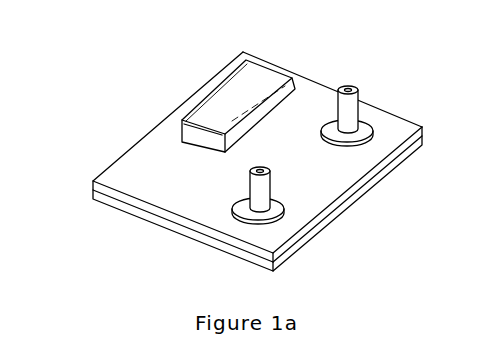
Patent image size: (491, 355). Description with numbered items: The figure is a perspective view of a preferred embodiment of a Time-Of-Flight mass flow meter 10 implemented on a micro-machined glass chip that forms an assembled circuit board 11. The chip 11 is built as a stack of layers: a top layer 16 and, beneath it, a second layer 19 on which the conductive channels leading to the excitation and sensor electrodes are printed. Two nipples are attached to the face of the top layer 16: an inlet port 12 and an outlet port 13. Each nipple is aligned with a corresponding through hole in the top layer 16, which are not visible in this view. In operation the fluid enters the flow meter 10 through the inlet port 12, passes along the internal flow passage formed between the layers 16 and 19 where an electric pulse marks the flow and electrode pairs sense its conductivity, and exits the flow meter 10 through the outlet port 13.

The flow meter 10 is at (73, 204).
The circuit board (chip) 11 is at (120, 173).
The inlet port 12 is at (296, 205).
The outlet port 13 is at (374, 136).
The top layer 16 is at (335, 59).
The second layer 19 is at (127, 235).